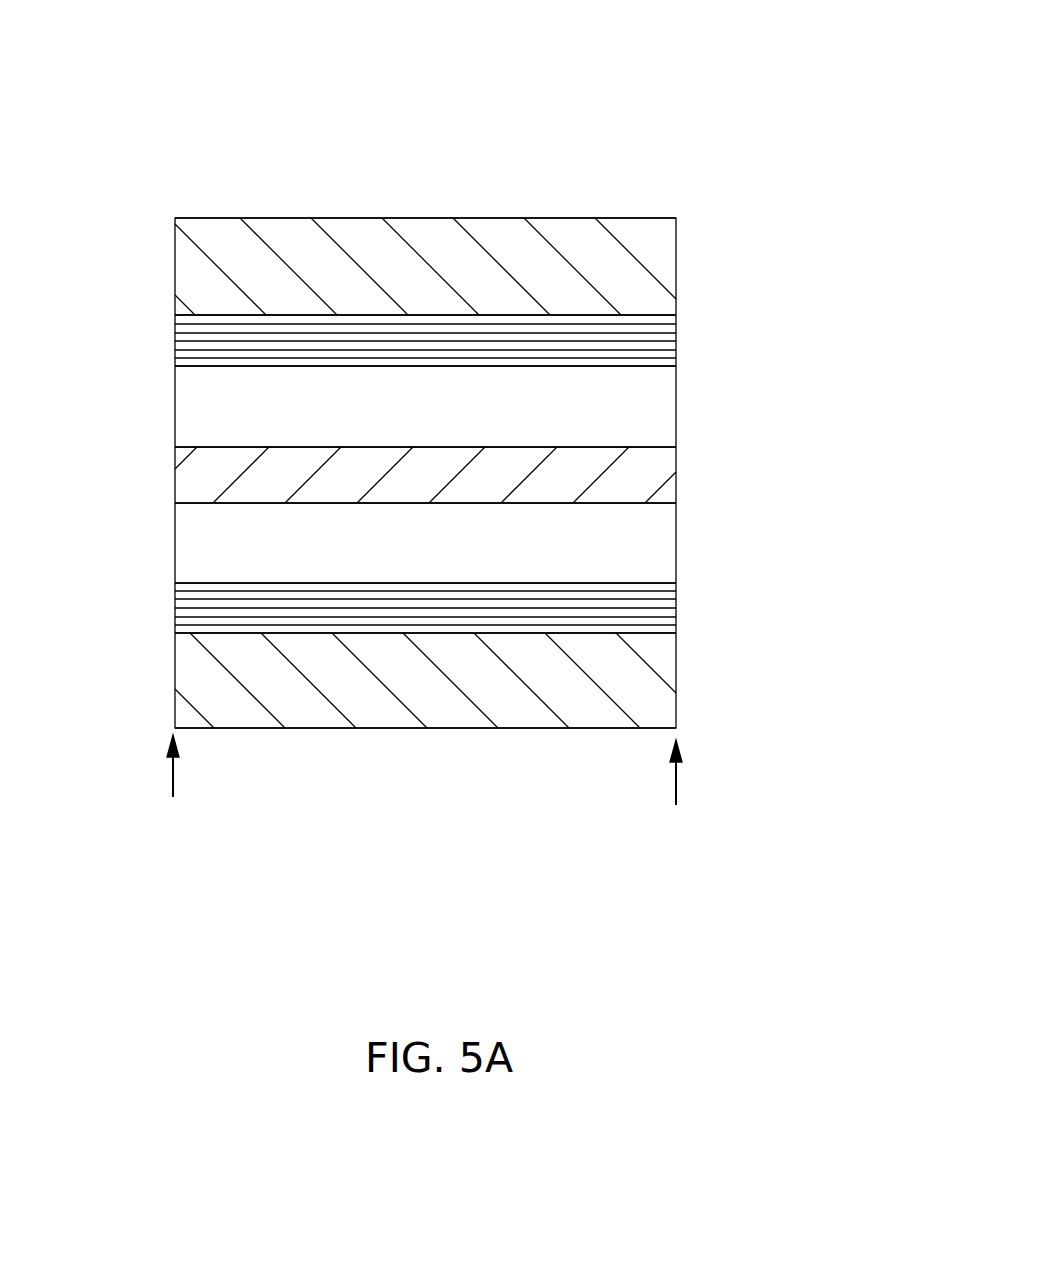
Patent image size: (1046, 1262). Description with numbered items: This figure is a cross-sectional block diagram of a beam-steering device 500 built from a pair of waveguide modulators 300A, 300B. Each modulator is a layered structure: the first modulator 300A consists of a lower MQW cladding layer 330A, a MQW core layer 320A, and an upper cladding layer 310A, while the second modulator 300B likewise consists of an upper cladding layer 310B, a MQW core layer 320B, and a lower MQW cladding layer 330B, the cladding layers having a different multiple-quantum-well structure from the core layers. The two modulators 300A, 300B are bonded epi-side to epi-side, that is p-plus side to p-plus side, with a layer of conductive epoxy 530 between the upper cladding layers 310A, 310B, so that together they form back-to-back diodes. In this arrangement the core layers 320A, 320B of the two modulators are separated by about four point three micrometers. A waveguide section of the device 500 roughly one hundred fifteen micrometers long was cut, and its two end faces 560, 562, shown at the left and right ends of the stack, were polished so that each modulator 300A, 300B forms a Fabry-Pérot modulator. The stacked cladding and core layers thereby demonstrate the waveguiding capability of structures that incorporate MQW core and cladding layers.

The beam-steering device 500 is at (563, 190).
The waveguide modulator 300A is at (491, 332).
The waveguide modulator 300B is at (487, 617).
The lower MQW cladding layer 330A is at (668, 272).
The MQW core layer 320A is at (175, 343).
The upper cladding layer 310A is at (663, 423).
The conductive epoxy 530 is at (670, 497).
The upper cladding layer 310B is at (187, 553).
The MQW core layer 320B is at (180, 607).
The lower MQW cladding layer 330B is at (660, 693).
The face 562 is at (170, 783).
The face 560 is at (676, 789).